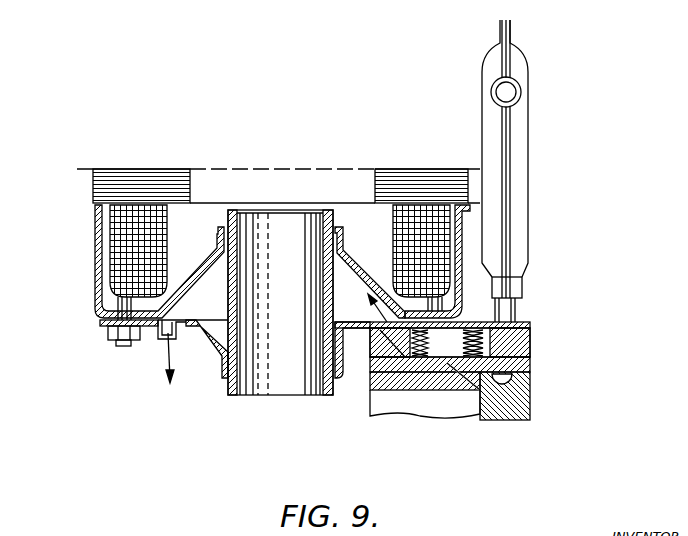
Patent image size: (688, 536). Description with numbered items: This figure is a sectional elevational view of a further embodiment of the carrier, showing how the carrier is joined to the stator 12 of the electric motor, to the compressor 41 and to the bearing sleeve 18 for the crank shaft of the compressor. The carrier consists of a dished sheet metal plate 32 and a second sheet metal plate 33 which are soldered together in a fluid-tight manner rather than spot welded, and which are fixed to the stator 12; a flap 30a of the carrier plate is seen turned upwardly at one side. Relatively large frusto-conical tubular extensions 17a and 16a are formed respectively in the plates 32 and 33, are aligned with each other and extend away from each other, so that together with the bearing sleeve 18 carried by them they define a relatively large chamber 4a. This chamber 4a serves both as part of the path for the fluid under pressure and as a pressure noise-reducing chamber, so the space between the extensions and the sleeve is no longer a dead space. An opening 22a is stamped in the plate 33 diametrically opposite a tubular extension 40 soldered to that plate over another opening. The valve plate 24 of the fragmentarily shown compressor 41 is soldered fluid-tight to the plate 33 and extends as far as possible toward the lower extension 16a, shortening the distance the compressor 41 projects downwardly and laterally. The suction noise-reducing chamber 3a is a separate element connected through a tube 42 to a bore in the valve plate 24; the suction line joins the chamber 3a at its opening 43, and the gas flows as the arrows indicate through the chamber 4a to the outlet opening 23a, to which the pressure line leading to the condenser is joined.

The stator 12 is at (159, 174).
The dished sheet metal plate 32 is at (98, 275).
The sheet metal plate 33 is at (104, 330).
The tubular extension 40 is at (162, 342).
The outlet opening 23a is at (187, 308).
The lower frusto-conical tubular extension 16a is at (214, 357).
The bearing sleeve 18 is at (281, 388).
The pressure noise-reducing chamber 4a is at (345, 300).
The upper frusto-conical tubular extension 17a is at (372, 250).
The flap 30a is at (462, 233).
The suction noise-reducing chamber 3a is at (520, 133).
The opening 43 is at (497, 93).
The tube 42 is at (522, 312).
The valve plate 24 is at (532, 338).
The compressor 41 is at (445, 406).
The opening 22a is at (373, 340).